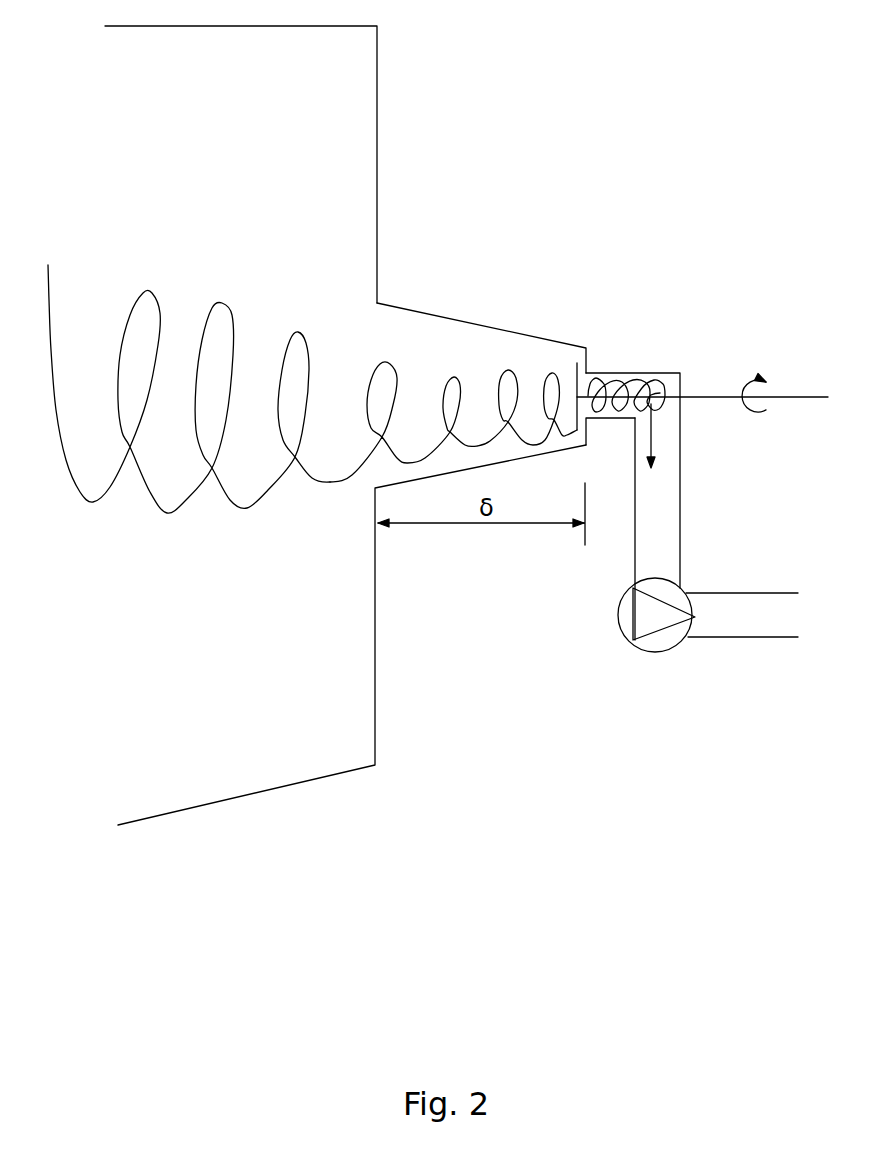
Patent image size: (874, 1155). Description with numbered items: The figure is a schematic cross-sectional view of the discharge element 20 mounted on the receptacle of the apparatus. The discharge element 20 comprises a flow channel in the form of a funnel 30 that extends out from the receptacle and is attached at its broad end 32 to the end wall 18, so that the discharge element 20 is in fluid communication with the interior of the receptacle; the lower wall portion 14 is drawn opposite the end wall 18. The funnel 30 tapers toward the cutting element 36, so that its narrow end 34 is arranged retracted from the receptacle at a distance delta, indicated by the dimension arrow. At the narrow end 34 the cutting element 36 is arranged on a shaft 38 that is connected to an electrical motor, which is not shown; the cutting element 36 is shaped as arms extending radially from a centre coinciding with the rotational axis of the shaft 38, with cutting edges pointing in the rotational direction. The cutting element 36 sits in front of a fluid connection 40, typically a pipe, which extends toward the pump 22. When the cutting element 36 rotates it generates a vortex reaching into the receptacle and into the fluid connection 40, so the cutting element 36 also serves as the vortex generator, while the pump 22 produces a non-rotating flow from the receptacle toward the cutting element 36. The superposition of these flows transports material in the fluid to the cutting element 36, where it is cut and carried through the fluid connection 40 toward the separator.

The rotor 14 is at (237, 807).
The end wall 18 is at (383, 202).
The discharge element 20 is at (517, 302).
The pump 22 is at (657, 657).
The funnel 30 is at (478, 335).
The broad end 32 is at (382, 320).
The narrow end 34 is at (598, 436).
The cutting element 36 is at (600, 372).
The shaft 38 is at (795, 385).
The fluid connection 40 is at (663, 518).